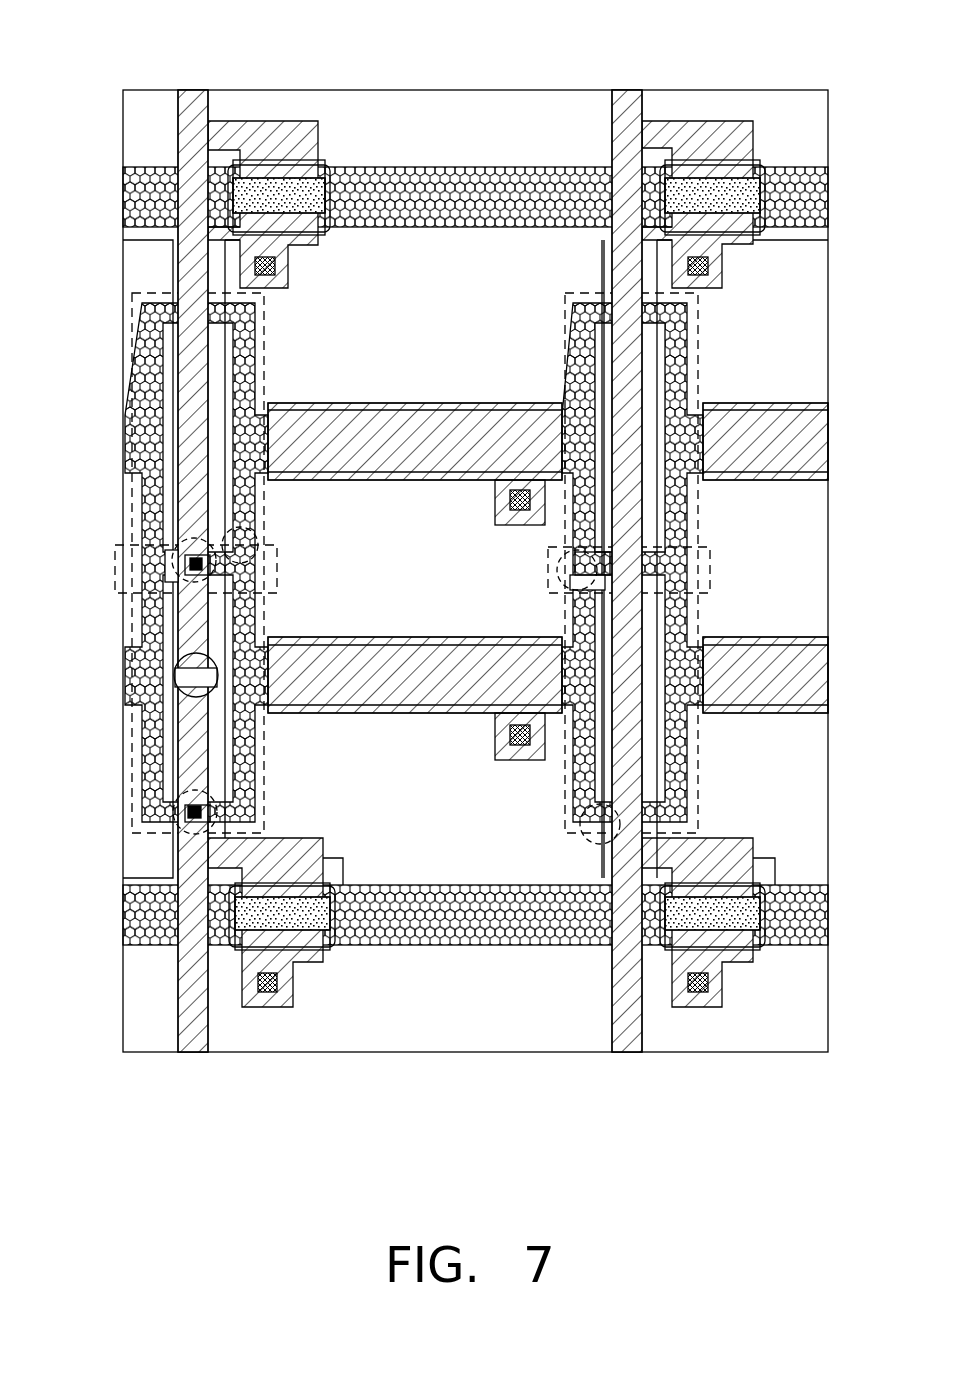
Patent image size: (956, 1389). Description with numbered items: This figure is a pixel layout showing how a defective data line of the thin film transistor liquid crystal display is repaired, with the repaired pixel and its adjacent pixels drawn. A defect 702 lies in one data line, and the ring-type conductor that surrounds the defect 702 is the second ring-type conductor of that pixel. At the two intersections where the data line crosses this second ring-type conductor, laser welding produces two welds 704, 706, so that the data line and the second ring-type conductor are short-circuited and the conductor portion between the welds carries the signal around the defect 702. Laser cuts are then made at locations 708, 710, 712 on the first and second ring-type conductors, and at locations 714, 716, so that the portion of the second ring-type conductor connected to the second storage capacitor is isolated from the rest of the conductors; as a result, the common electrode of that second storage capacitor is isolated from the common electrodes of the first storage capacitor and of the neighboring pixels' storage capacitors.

The defect 702 is at (213, 692).
The weld 704 is at (192, 552).
The weld 706 is at (192, 806).
The location 708 is at (180, 558).
The location 710 is at (262, 545).
The location 712 is at (186, 812).
The location 714 is at (566, 562).
The location 716 is at (592, 831).